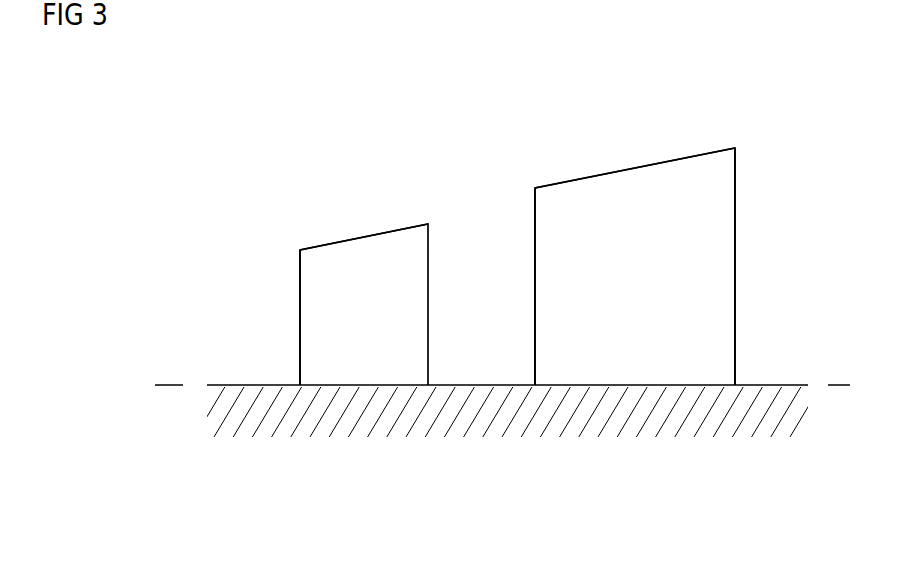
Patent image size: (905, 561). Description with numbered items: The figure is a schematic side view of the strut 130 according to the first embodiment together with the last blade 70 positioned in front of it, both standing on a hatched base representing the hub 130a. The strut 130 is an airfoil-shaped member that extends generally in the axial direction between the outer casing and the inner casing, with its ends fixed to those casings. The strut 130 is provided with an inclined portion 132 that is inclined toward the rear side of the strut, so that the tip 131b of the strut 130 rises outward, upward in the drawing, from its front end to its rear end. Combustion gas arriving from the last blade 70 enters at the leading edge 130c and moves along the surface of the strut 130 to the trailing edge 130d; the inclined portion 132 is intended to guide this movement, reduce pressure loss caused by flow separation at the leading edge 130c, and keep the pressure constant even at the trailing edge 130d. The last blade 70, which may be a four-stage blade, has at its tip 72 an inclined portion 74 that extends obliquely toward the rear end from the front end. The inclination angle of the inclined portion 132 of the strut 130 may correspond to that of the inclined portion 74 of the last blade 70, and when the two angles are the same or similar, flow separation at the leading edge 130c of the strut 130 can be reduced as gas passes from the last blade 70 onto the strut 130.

The last blade 70 is at (359, 220).
The tip of the last blade 72 is at (428, 242).
The inclined portion of the blade 74 is at (365, 233).
The strut 130 is at (554, 171).
The inclined portion 132 is at (634, 166).
The tip of the strut 131b is at (735, 158).
The leading edge 130c is at (535, 285).
The trailing edge 130d is at (735, 343).
The hub 130a is at (712, 386).